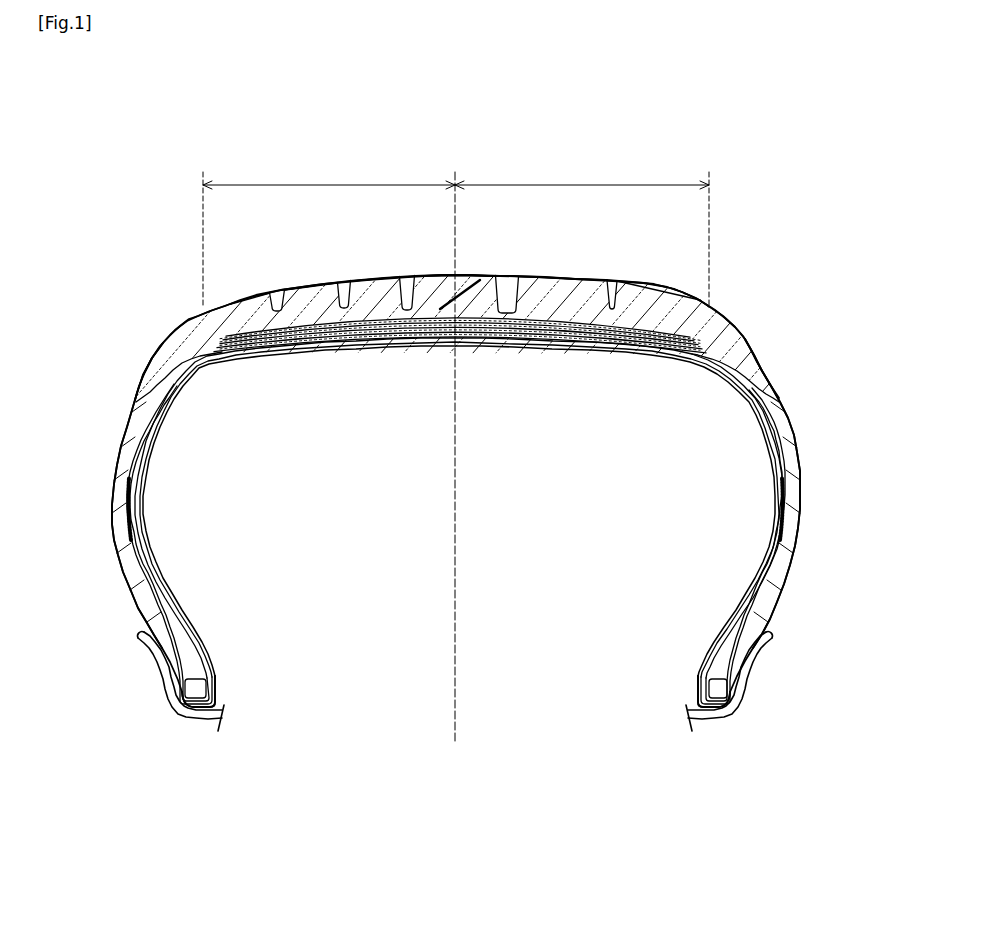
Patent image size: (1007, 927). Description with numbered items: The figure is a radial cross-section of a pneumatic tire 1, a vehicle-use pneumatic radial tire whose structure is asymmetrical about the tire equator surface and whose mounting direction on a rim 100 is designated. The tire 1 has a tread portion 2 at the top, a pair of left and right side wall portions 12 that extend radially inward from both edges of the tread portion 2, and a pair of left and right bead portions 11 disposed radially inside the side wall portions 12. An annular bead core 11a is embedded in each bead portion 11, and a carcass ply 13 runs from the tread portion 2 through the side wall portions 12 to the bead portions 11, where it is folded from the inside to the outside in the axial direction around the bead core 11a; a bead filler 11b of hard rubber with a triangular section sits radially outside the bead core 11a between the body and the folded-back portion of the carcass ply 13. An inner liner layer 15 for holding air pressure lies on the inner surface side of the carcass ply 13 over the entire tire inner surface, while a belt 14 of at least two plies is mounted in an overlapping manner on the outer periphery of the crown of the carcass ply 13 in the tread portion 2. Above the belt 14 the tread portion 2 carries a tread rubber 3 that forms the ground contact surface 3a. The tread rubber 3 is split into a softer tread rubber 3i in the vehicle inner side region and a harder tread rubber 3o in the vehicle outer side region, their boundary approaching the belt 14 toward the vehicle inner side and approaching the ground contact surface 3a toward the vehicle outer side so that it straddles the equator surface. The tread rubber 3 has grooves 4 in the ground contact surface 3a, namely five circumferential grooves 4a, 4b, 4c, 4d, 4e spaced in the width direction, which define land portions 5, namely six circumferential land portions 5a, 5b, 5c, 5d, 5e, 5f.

The pneumatic tire 1 is at (467, 98).
The tread portion 2 is at (467, 265).
The tread rubber 3 is at (483, 316).
The tread rubber in the vehicle inner side region 3i is at (299, 282).
The tread rubber in the vehicle outer side region 3o is at (558, 279).
The ground contact surface 3a is at (674, 296).
The grooves 4 is at (440, 273).
The circumferential groove 4a is at (612, 285).
The circumferential groove 4b is at (507, 276).
The circumferential groove 4c is at (408, 276).
The circumferential groove 4d is at (345, 282).
The circumferential groove 4e is at (277, 289).
The land portions 5 is at (465, 346).
The land portion 5a is at (540, 300).
The land portion 5b is at (428, 300).
The land portion 5c is at (373, 302).
The land portion 5d is at (313, 302).
The land portion 5e is at (643, 309).
The land portion 5f is at (253, 300).
The bead portions 11 is at (456, 545).
The bead core 11a is at (200, 692).
The bead filler 11b is at (177, 630).
The side wall portions 12 is at (812, 510).
The carcass ply 13 is at (776, 414).
The belt 14 is at (697, 327).
The inner liner layer 15 is at (139, 524).
The rim 100 is at (158, 660).